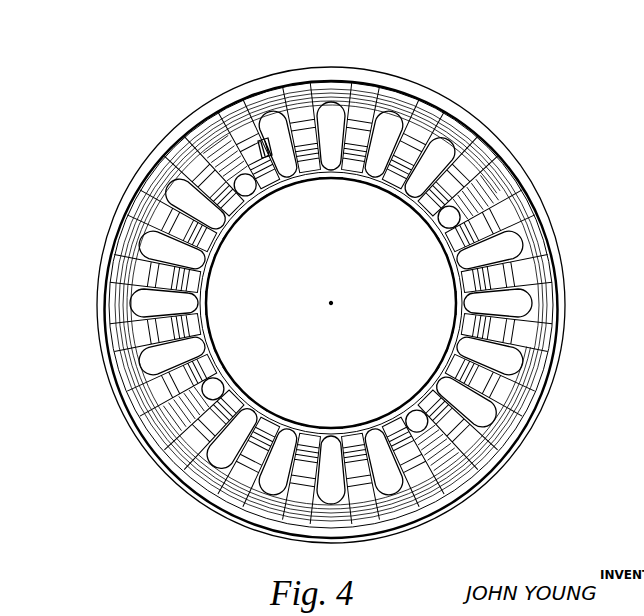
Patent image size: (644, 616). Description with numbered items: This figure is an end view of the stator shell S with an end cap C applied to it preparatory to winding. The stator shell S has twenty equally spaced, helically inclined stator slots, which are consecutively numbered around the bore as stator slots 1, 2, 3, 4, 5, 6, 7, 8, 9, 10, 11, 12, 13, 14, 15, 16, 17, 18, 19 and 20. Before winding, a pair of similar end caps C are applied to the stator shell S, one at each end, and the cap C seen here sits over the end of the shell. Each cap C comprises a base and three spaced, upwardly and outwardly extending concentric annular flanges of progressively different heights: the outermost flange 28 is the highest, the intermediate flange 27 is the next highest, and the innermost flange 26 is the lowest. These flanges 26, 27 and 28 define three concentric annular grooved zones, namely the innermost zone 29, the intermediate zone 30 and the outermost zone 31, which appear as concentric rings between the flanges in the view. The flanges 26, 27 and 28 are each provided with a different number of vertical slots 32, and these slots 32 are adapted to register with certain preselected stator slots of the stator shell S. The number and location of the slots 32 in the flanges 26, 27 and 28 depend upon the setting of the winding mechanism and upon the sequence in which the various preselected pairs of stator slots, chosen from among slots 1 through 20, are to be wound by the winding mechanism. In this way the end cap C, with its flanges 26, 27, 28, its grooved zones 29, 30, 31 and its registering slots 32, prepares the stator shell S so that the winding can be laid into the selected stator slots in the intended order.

The stator shell S is at (331, 305).
The end cap C is at (362, 309).
The innermost flange 26 is at (331, 303).
The intermediate flange 27 is at (331, 303).
The outermost flange 28 is at (345, 303).
The innermost zone 29 is at (247, 91).
The intermediate zone 30 is at (280, 103).
The outermost zone 31 is at (331, 276).
The vertical slots 32 is at (366, 318).
The stator slot 1 is at (182, 253).
The stator slot 2 is at (202, 210).
The stator slot 3 is at (236, 177).
The stator slot 4 is at (292, 192).
The stator slot 5 is at (294, 109).
The stator slot 6 is at (382, 156).
The stator slot 7 is at (404, 208).
The stator slot 8 is at (458, 210).
The stator slot 9 is at (480, 253).
The stator slot 10 is at (483, 303).
The stator slot 11 is at (478, 353).
The stator slot 12 is at (456, 396).
The stator slot 13 is at (422, 427).
The stator slot 14 is at (368, 413).
The stator slot 15 is at (331, 455).
The stator slot 16 is at (281, 449).
The stator slot 17 is at (261, 398).
The stator slot 18 is at (206, 395).
The stator slot 19 is at (185, 353).
The stator slot 20 is at (179, 303).